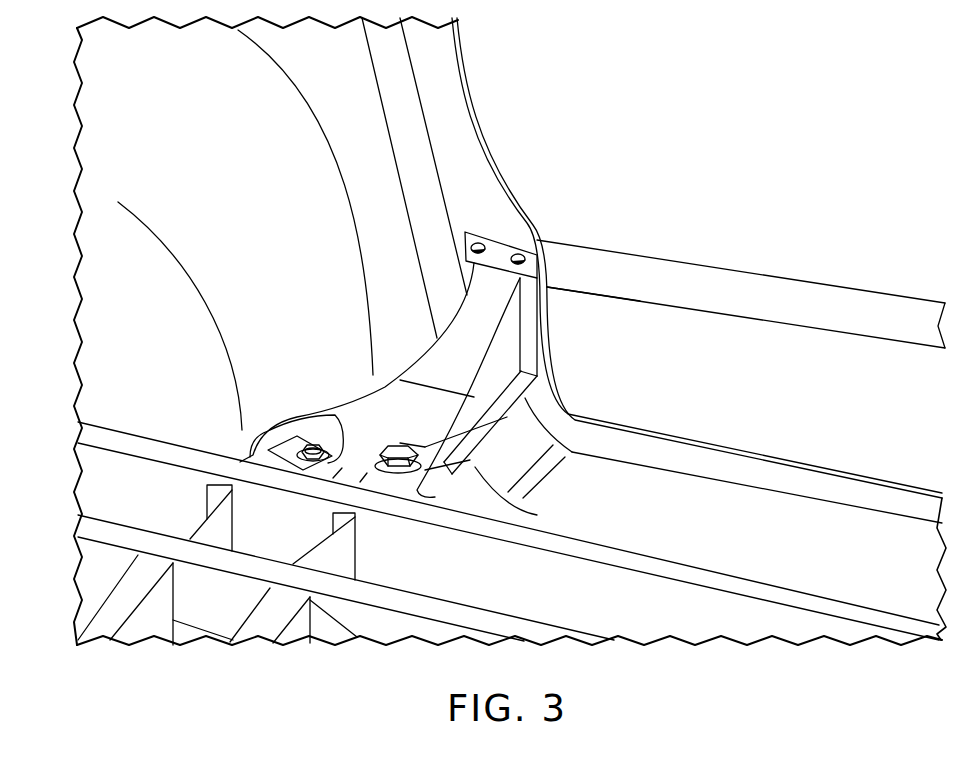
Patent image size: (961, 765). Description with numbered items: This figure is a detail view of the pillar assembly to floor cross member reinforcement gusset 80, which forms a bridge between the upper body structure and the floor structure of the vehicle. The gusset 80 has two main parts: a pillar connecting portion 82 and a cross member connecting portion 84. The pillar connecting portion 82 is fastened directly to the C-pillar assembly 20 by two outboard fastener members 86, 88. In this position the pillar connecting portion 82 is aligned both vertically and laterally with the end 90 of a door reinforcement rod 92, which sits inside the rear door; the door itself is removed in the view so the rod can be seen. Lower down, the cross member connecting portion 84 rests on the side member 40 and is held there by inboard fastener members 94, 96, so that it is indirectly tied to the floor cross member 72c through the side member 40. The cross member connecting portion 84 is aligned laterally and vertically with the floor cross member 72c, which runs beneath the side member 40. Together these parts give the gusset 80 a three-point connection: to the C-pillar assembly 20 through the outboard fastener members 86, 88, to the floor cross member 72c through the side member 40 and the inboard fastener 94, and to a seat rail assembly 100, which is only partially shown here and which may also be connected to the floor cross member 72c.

The C-pillar assembly 20 is at (457, 108).
The side member 40 is at (747, 590).
The floor cross member 72c is at (90, 627).
The pillar assembly to floor cross member reinforcement gusset 80 is at (423, 306).
The pillar connecting portion 82 is at (417, 196).
The cross member connecting portion 84 is at (388, 364).
The outboard fastener member 86 is at (478, 246).
The outboard fastener member 88 is at (524, 260).
The end of door reinforcement rod 90 is at (565, 289).
The door reinforcement rod 92 is at (779, 292).
The inboard fastener member 94 is at (313, 447).
The inboard fastener member 96 is at (399, 449).
The seat rail assembly 100 is at (534, 456).